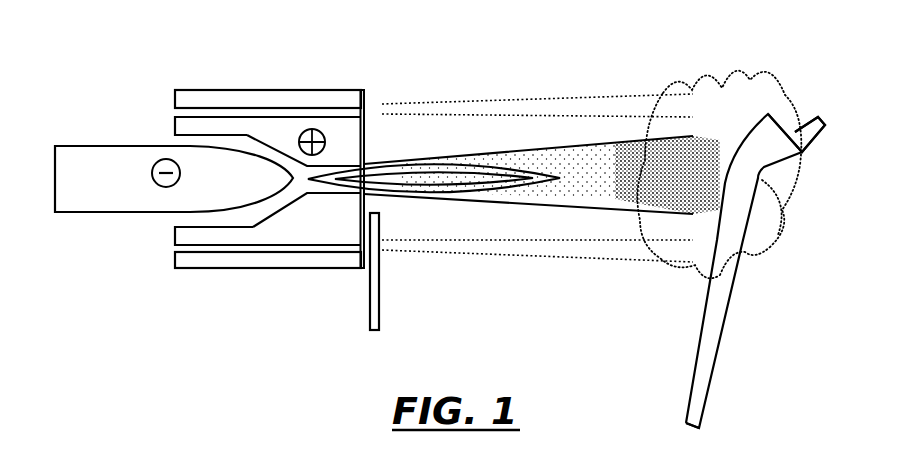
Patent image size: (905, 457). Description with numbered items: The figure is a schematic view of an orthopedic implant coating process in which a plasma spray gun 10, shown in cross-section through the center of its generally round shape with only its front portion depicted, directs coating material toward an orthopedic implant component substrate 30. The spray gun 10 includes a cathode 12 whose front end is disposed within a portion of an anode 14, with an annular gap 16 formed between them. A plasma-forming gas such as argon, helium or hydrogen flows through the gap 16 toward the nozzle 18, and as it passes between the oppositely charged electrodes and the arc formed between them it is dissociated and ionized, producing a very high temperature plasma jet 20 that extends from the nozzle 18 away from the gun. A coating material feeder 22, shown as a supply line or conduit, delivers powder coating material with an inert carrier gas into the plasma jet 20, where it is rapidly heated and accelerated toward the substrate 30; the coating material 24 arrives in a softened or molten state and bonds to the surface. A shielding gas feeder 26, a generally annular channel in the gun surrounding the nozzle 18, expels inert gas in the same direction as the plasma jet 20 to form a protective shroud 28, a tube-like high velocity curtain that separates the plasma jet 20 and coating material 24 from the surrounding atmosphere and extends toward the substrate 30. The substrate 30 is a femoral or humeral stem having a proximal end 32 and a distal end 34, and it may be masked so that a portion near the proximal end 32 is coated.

The plasma spray gun 10 is at (94, 62).
The cathode 12 is at (160, 207).
The anode 14 is at (205, 120).
The annular gap 16 is at (243, 140).
The nozzle 18 is at (370, 163).
The plasma jet 20 is at (400, 178).
The coating material feeder 22 is at (375, 265).
The coating material 24 is at (595, 165).
The shielding gas feeder 26 is at (303, 108).
The protective shroud 28 is at (560, 105).
The orthopedic implant component substrate 30 is at (721, 349).
The proximal end 32 is at (750, 162).
The distal end 34 is at (697, 405).